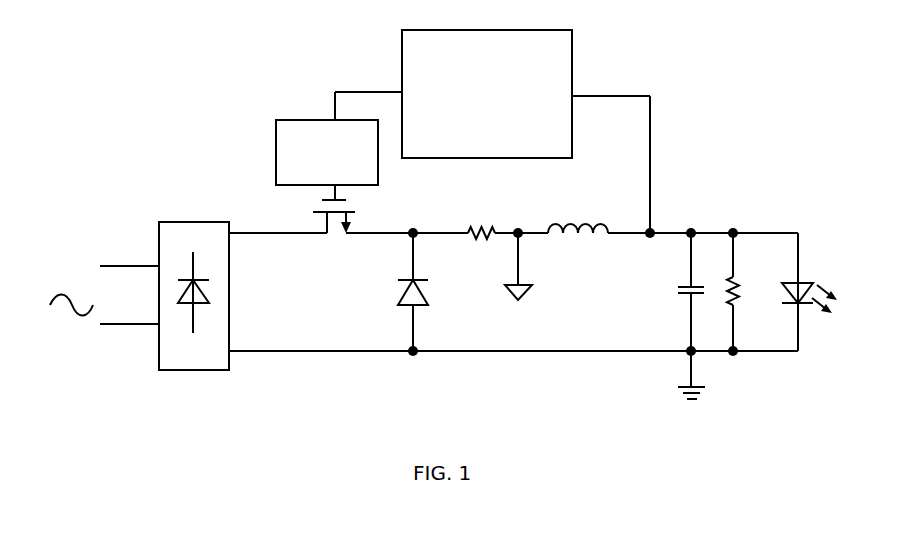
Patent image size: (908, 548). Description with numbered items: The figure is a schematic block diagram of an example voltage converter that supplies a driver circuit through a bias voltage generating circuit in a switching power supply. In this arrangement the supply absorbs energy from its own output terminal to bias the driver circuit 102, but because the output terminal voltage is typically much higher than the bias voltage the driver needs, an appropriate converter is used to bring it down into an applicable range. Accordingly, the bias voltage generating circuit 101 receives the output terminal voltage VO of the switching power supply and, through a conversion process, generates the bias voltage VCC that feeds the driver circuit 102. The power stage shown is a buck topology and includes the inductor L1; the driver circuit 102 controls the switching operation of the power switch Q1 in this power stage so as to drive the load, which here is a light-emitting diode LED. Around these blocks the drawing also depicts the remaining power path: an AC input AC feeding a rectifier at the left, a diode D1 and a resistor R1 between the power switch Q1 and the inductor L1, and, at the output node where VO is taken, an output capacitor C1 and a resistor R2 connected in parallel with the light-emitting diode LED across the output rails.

The bias voltage generating circuit 101 is at (487, 94).
The driver circuit 102 is at (276, 154).
The power switch Q1 is at (334, 223).
The freewheeling diode D1 is at (430, 292).
The sense resistor R1 is at (485, 219).
The inductor L1 is at (578, 216).
The output capacitor C1 is at (674, 292).
The load resistor R2 is at (747, 292).
The light-emitting diode LED is at (830, 292).
The AC input source AC is at (104, 294).
The bias voltage VCC is at (368, 93).
The output terminal voltage VO is at (611, 150).